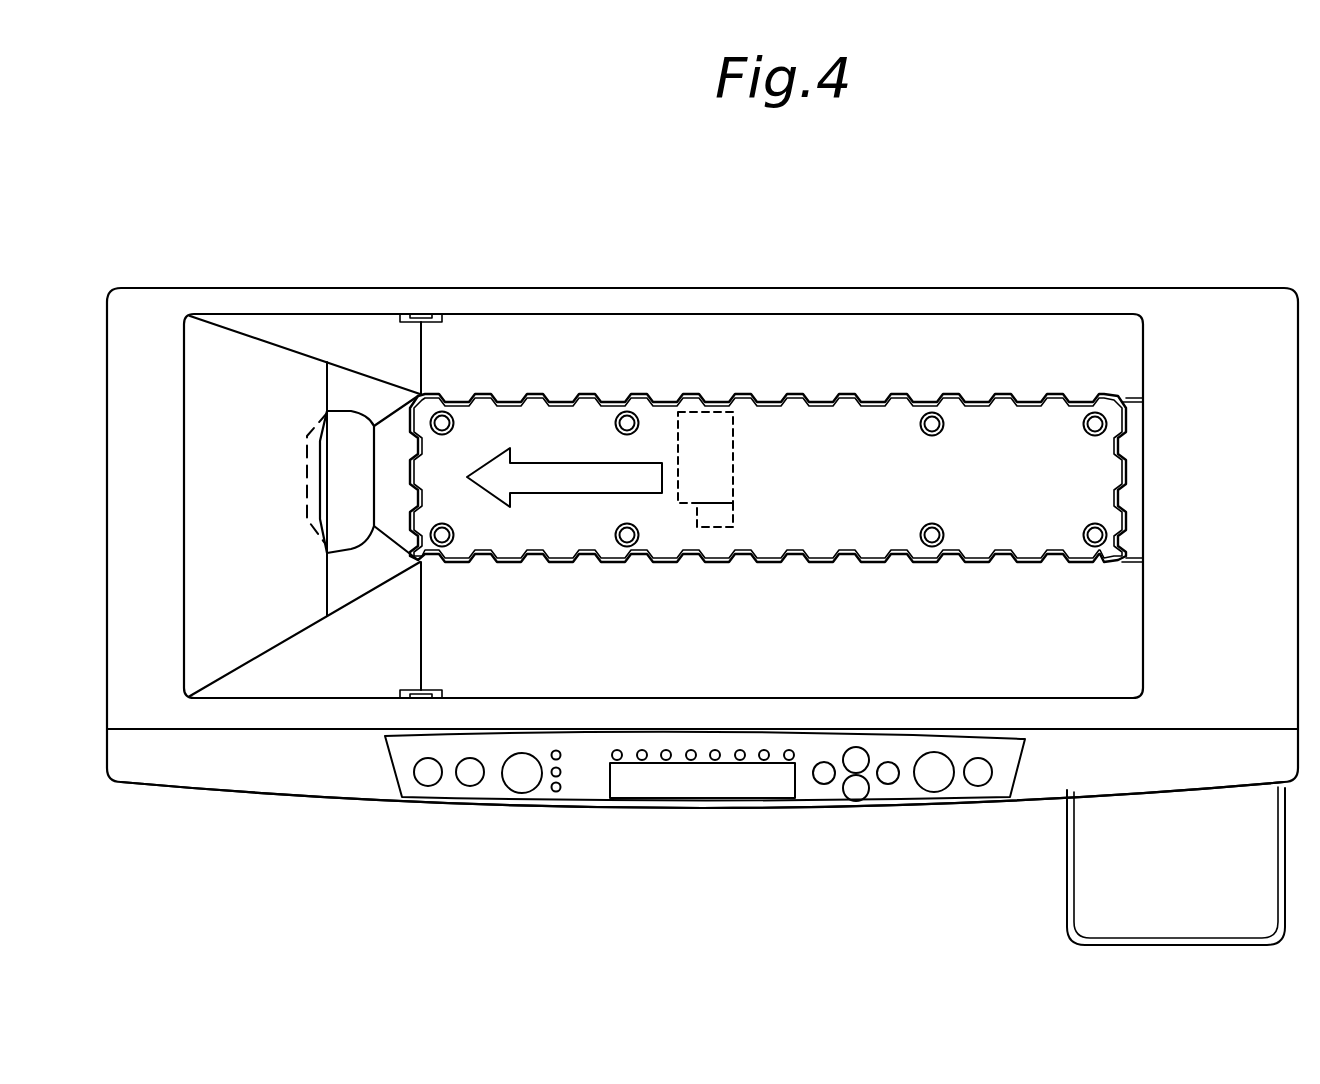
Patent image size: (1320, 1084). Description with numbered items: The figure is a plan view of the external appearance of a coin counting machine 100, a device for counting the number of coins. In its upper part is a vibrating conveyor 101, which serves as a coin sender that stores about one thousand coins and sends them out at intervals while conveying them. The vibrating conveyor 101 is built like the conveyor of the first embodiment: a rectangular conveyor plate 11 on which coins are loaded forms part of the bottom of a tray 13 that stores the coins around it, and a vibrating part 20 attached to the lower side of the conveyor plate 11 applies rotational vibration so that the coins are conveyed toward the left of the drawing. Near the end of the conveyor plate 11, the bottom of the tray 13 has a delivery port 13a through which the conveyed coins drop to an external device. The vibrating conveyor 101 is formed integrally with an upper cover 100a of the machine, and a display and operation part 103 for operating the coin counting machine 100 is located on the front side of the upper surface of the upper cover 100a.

The coin counting machine 100 is at (788, 213).
The vibrating conveyor 101 is at (879, 283).
The tray 13 is at (690, 335).
The delivery port 13a is at (356, 413).
The conveyor plate 11 is at (998, 422).
The vibrating part 20 is at (735, 452).
The display and operation part 103 is at (380, 770).
The upper cover 100a is at (697, 814).